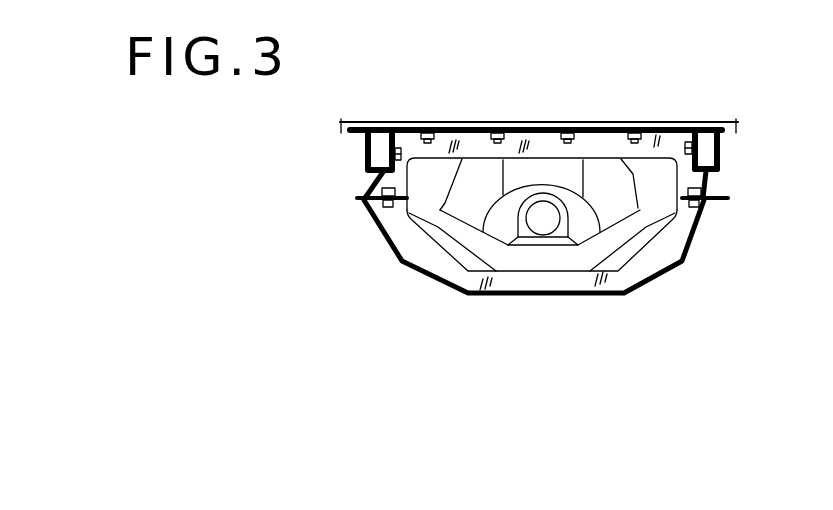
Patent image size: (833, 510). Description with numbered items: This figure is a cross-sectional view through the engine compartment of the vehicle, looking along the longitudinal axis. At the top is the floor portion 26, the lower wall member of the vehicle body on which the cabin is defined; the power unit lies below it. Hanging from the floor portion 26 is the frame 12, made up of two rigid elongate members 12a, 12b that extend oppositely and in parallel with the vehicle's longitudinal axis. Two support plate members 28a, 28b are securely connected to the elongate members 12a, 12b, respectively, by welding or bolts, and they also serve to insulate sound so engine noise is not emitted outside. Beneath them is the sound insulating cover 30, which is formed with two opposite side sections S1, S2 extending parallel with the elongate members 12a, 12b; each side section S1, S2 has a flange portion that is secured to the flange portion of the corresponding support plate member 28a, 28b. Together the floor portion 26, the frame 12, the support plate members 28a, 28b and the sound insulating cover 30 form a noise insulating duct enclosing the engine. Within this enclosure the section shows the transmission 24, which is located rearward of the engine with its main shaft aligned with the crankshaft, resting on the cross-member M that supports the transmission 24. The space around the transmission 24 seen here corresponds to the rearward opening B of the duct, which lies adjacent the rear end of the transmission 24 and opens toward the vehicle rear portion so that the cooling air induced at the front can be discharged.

The floor portion 26 is at (521, 122).
The transmission 24 is at (555, 200).
The rearward opening B is at (657, 168).
The frame 12 is at (723, 133).
The rigid elongate member 12a is at (720, 152).
The rigid elongate member 12b is at (367, 158).
The support plate member 28a is at (707, 188).
The support plate member 28b is at (373, 178).
The side section S1 is at (708, 205).
The side section S2 is at (368, 203).
The sound insulating cover 30 is at (420, 275).
The cross-member M is at (627, 228).